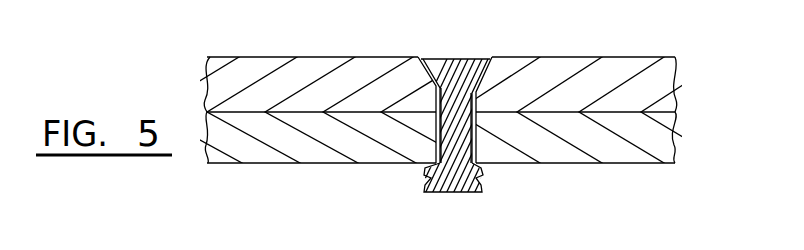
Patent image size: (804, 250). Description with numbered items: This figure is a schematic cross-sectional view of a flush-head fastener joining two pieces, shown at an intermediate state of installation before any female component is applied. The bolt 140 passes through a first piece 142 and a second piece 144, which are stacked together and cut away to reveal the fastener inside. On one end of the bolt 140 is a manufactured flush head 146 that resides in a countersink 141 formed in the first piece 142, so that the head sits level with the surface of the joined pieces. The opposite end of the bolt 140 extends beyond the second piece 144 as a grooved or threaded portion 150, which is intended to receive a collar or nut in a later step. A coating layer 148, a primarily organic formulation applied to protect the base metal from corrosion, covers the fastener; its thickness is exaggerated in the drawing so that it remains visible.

The bolt 140 is at (481, 183).
The countersink 141 is at (505, 75).
The first piece 142 is at (266, 73).
The second piece 144 is at (280, 148).
The flush head 146 is at (450, 65).
The coating layer 148 is at (469, 61).
The grooved or threaded portion 150 is at (455, 197).